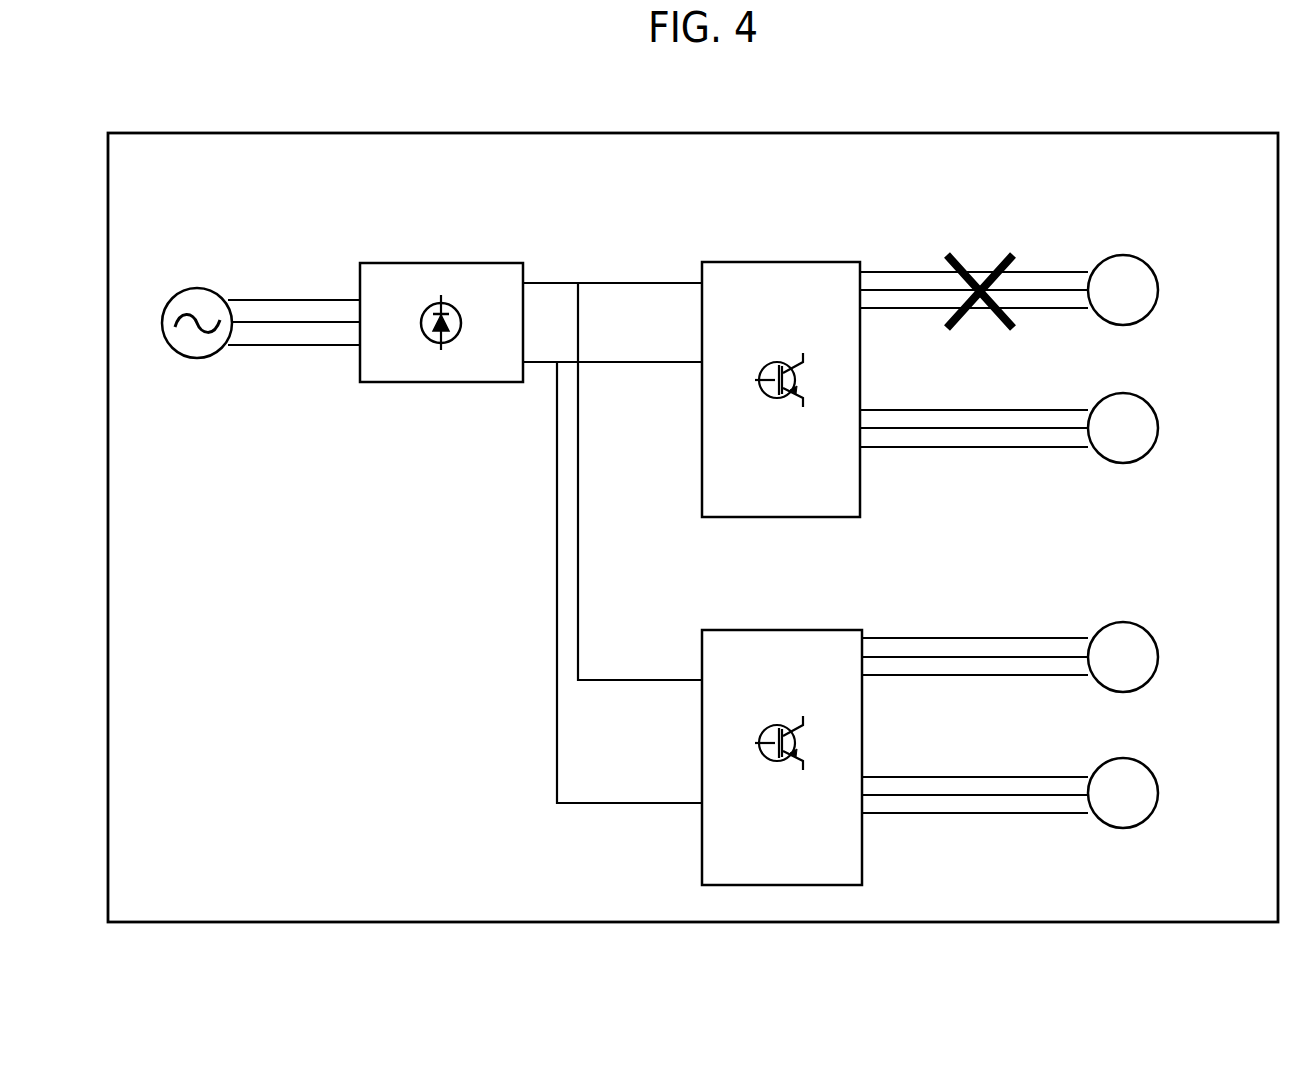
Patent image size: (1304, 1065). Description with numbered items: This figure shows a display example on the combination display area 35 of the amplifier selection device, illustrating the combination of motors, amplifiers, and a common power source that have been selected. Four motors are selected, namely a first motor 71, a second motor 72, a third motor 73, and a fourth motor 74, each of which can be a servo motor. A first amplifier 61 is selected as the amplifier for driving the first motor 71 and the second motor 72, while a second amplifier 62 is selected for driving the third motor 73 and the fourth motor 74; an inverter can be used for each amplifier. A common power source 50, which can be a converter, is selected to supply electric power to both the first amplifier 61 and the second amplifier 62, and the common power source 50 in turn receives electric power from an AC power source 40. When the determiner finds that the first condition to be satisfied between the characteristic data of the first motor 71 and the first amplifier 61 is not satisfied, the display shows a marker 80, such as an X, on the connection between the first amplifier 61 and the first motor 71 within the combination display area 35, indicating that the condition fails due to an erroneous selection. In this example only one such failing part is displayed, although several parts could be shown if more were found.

The combination display area 35 is at (1100, 133).
The AC power source 40 is at (203, 290).
The common power source 50 is at (462, 262).
The first amplifier 61 is at (803, 260).
The second amplifier 62 is at (802, 628).
The first motor 71 is at (1159, 289).
The second motor 72 is at (1159, 427).
The third motor 73 is at (1159, 656).
The fourth motor 74 is at (1159, 792).
The marker 80 is at (975, 257).